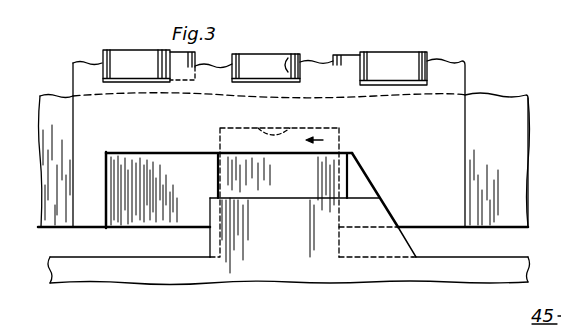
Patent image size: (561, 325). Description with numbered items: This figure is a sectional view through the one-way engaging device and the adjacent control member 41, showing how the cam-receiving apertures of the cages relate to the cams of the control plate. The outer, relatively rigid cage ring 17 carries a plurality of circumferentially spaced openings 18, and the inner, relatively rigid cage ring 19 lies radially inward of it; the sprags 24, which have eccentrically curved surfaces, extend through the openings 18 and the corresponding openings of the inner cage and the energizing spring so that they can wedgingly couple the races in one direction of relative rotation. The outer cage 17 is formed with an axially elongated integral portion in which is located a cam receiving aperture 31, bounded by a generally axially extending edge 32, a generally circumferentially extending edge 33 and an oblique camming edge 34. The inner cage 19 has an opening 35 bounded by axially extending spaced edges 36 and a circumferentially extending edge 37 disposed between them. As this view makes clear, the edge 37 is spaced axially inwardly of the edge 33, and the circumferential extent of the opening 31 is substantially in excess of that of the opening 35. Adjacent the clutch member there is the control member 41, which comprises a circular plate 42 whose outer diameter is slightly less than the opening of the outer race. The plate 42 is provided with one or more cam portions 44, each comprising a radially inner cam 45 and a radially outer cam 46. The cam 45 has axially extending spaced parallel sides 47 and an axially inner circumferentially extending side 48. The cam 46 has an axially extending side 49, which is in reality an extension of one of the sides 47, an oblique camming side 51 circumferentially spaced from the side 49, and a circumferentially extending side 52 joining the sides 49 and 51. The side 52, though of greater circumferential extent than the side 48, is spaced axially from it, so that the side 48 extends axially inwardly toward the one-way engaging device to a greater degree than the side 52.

The outer cage ring 17 is at (80, 76).
The openings 18 is at (288, 58).
The inner cage ring 19 is at (490, 102).
The sprags 24 is at (130, 55).
The cam receiving aperture 31 is at (136, 206).
The axially extending edge 32 is at (117, 167).
The circumferentially extending edge 33 is at (139, 162).
The oblique camming edge 34 is at (362, 167).
The opening 35 is at (343, 140).
The axially extending spaced edges 36 is at (233, 121).
The circumferentially extending edge 37 is at (262, 126).
The control member 41 is at (252, 290).
The circular plate 42 is at (453, 272).
The cam portions 44 is at (200, 240).
The radially inner cam 45 is at (213, 165).
The radially outer cam 46 is at (312, 190).
The axially extending spaced parallel sides 47 is at (218, 179).
The axially inner circumferentially extending side 48 is at (292, 153).
The axially extending side 49 is at (212, 207).
The oblique camming side 51 is at (387, 215).
The circumferentially extending side 52 is at (247, 201).